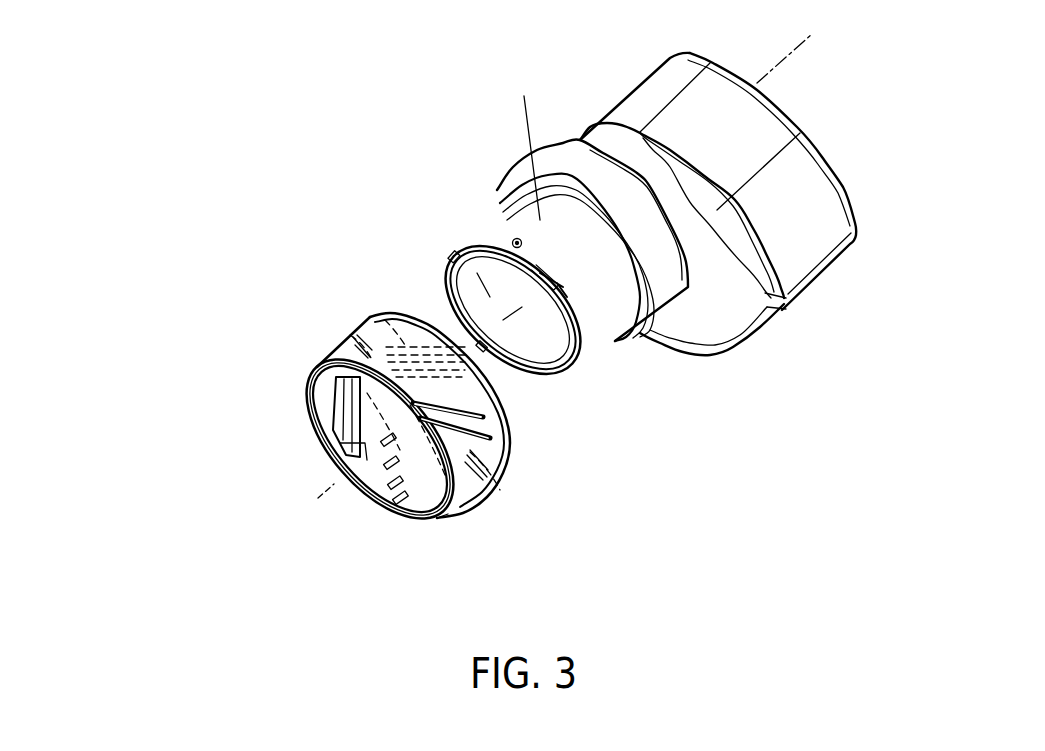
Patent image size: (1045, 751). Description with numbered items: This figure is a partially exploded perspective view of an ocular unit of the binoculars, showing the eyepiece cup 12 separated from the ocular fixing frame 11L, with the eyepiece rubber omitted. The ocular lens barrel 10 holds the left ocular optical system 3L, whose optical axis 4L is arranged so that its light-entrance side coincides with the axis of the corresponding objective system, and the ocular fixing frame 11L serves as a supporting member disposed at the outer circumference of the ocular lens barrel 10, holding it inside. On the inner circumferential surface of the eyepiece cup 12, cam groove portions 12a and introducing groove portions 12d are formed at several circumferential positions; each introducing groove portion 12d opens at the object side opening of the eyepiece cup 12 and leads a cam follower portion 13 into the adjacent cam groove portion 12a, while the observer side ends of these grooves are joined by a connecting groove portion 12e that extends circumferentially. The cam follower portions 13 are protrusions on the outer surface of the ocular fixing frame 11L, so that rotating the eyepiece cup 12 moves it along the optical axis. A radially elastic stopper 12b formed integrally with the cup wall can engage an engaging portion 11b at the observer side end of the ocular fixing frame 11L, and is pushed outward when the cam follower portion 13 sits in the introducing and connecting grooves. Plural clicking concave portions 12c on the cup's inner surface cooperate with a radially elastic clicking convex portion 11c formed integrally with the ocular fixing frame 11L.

The left ocular optical system 3L is at (477, 273).
The optical axis of the left ocular optical system 4L is at (334, 484).
The ocular lens barrel 10 is at (566, 378).
The ocular fixing frame 11L is at (524, 96).
The engaging portion 11b is at (583, 340).
The clicking convex portion 11c is at (526, 378).
The eyepiece cup 12 is at (383, 391).
The cam groove portion 12a is at (335, 392).
The stopper 12b is at (411, 323).
The clicking concave portion 12c is at (406, 500).
The introducing groove portion 12d is at (445, 335).
The connecting groove portion 12e is at (340, 443).
The cam follower portion 13 is at (514, 238).